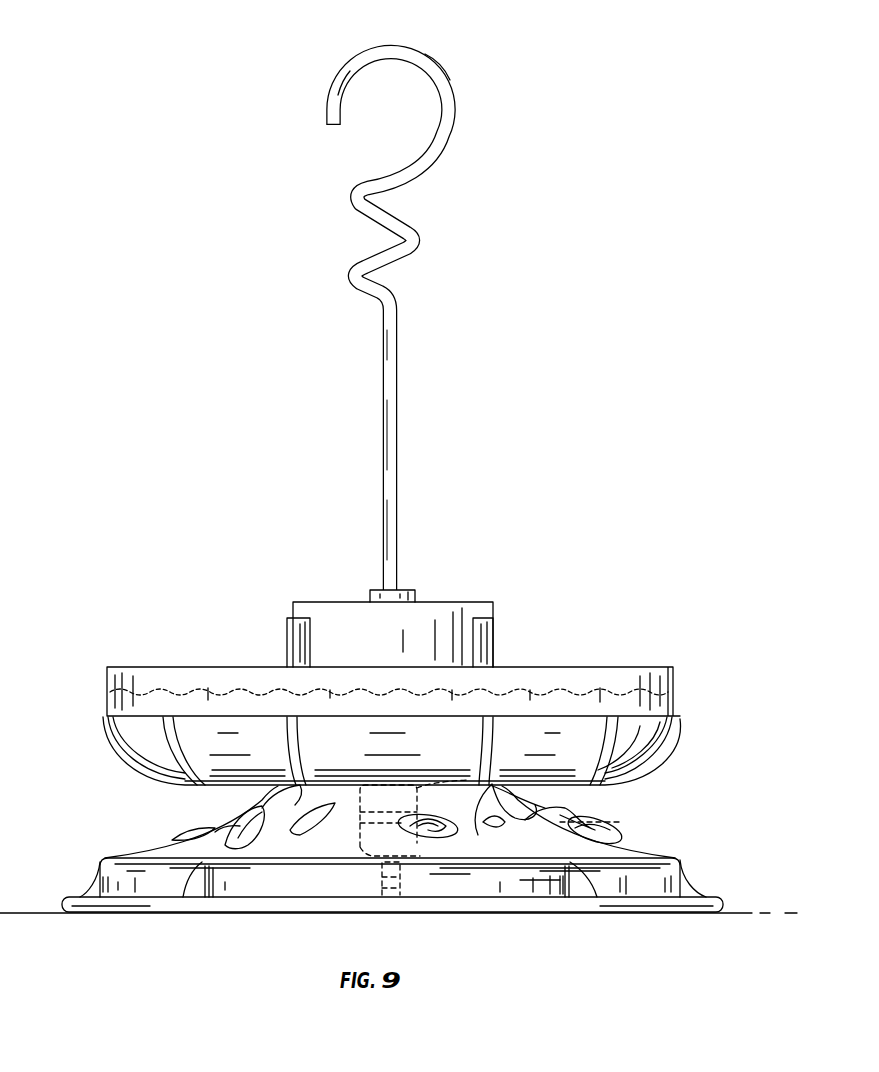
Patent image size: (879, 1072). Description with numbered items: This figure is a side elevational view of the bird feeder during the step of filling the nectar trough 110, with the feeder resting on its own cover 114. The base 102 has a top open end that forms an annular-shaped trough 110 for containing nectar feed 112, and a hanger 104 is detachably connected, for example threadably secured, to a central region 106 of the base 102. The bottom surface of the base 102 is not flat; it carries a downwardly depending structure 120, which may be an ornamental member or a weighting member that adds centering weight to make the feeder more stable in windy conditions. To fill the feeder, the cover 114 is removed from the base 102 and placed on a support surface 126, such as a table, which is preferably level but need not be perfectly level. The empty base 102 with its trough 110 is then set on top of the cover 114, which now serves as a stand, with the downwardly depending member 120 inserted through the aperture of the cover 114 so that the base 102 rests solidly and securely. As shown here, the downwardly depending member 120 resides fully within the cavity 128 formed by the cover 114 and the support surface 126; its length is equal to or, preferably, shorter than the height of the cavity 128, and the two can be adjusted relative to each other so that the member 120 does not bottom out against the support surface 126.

The base 102 is at (680, 725).
The hanger 104 is at (398, 390).
The central region 106 is at (457, 610).
The trough 110 is at (605, 772).
The nectar feed 112 is at (528, 690).
The cover 114 is at (575, 812).
The downwardly depending structure 120 is at (417, 848).
The support surface 126 is at (737, 912).
The cavity 128 is at (560, 822).